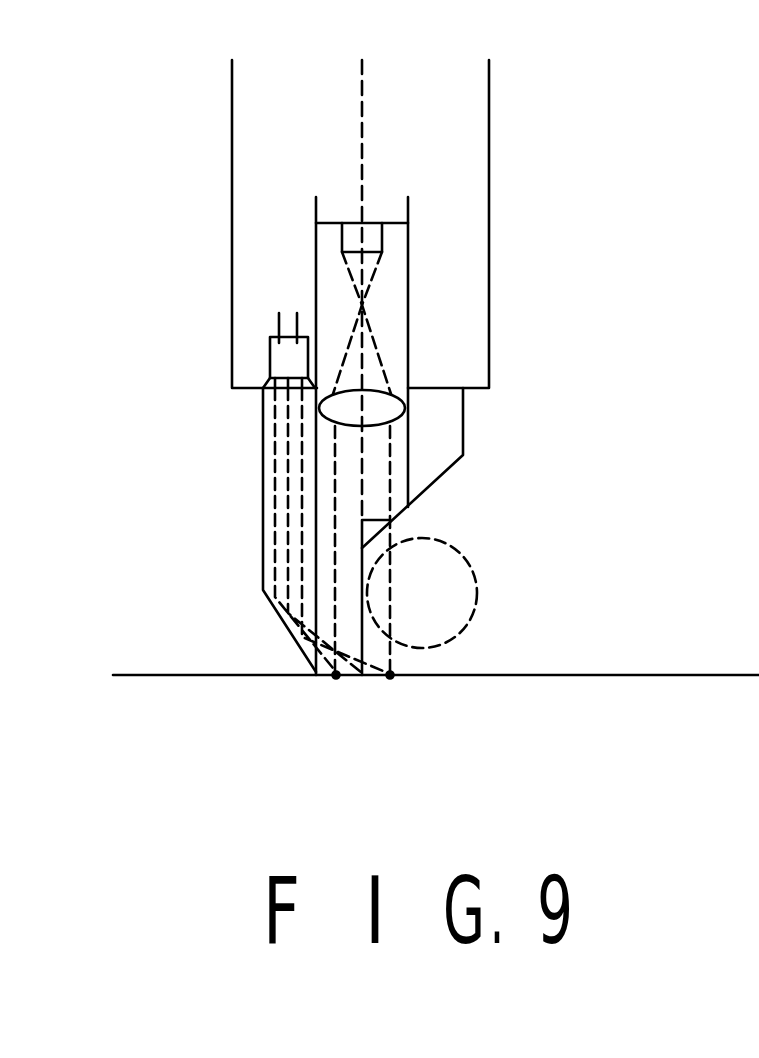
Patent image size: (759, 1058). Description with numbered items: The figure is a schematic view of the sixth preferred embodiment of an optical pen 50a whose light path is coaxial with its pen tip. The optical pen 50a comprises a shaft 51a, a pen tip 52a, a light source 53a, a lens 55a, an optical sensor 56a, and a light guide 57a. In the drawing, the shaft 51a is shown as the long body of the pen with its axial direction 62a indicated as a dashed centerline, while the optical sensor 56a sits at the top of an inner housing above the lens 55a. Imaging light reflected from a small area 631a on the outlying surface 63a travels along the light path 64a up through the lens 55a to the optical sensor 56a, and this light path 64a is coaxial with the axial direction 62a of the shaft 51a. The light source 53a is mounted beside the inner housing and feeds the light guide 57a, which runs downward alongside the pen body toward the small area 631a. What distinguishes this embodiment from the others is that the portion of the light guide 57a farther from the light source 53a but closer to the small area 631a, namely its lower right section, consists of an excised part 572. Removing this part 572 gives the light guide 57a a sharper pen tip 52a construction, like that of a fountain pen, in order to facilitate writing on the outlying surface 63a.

The optical pen 50a is at (175, 264).
The shaft 51a is at (238, 147).
The pen tip 52a is at (313, 668).
The light source 53a is at (282, 362).
The lens 55a is at (400, 407).
The optical sensor 56a is at (370, 240).
The light guide 57a is at (263, 470).
The axial direction of shaft 62a is at (362, 100).
The outlying surface 63a is at (683, 675).
The small area 631a is at (390, 679).
The light path 64a is at (392, 520).
The excised part 572 is at (477, 610).